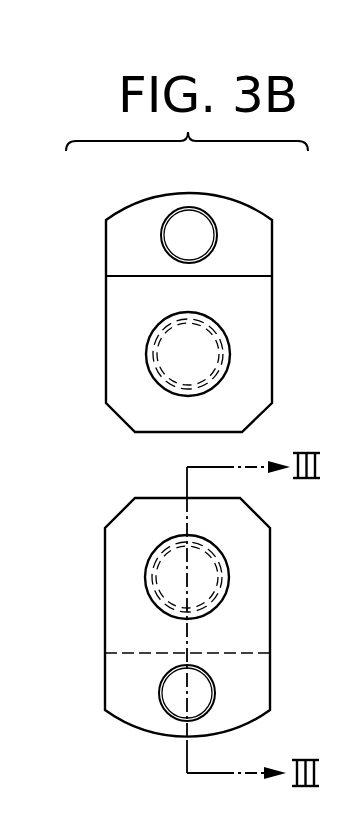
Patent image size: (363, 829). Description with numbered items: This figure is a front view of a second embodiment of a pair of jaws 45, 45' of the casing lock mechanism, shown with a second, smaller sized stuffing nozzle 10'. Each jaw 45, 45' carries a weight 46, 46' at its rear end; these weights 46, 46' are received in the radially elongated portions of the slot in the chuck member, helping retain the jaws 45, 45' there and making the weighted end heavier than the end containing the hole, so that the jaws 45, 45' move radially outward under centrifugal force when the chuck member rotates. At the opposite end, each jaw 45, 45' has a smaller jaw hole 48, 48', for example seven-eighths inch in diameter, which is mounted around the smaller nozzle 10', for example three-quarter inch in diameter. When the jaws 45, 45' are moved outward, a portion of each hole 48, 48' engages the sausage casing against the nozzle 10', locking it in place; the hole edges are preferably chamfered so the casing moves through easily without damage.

The jaw 45 is at (215, 312).
The weight 46 is at (233, 217).
The jaw hole 48 is at (245, 340).
The nozzle 10' is at (245, 354).
The jaw 45' is at (221, 617).
The weight 46' is at (251, 693).
The jaw hole 48' is at (243, 577).